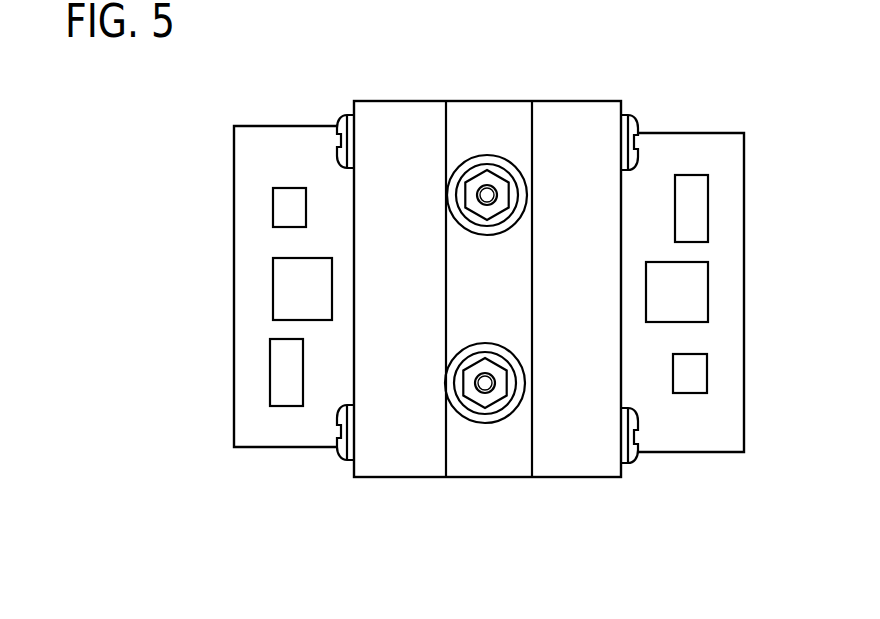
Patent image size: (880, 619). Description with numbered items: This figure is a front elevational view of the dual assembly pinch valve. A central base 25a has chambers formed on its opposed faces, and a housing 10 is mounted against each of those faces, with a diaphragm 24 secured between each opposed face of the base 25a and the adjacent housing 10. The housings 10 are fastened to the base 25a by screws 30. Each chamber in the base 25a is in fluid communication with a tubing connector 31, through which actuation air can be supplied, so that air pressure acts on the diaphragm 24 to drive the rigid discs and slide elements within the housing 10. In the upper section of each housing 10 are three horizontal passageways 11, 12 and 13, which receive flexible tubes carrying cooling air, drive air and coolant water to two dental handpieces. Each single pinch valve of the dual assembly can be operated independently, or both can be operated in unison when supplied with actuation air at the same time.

The housing 10 is at (395, 135).
The horizontal passageway 11 is at (285, 199).
The horizontal passageway 12 is at (305, 292).
The horizontal passageway 13 is at (290, 367).
The diaphragm 24 is at (446, 101).
The base 25a is at (495, 113).
The screw 30 is at (637, 115).
The tubing connector 31 is at (472, 217).